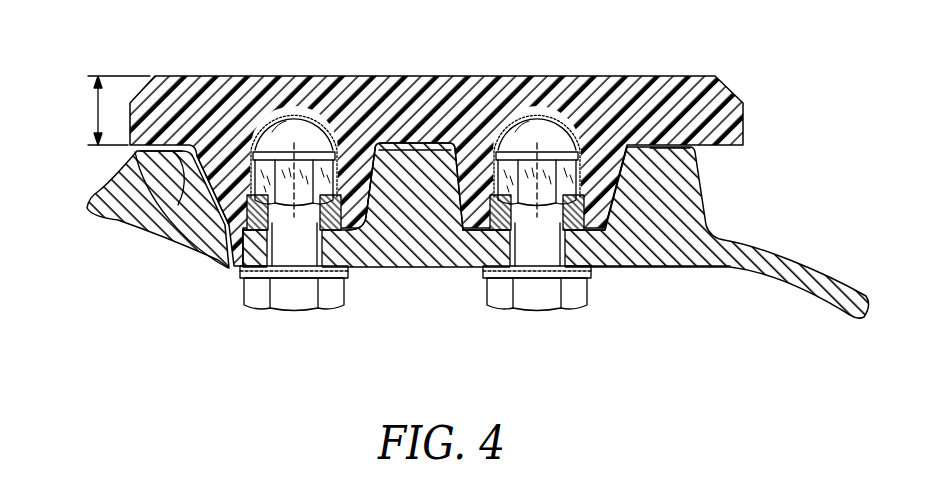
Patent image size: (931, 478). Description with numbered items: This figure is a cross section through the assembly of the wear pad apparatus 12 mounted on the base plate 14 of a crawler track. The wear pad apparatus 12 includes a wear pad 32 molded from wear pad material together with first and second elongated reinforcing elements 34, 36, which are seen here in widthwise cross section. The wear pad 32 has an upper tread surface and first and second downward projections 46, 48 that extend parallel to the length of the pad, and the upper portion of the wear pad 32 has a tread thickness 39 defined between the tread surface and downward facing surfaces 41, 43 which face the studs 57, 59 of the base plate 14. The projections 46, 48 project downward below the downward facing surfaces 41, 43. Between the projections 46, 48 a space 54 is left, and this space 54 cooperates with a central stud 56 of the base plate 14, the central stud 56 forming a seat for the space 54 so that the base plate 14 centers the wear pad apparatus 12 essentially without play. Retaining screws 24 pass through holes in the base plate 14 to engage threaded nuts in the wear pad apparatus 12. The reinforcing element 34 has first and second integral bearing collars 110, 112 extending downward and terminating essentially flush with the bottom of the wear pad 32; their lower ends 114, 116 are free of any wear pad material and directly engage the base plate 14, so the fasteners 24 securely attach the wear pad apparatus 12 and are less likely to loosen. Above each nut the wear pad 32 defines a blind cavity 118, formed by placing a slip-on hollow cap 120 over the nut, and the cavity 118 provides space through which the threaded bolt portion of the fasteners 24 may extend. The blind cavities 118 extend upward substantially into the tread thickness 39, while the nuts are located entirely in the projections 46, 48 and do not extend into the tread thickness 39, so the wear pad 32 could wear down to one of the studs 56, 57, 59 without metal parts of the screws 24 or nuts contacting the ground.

The wear pad apparatus 12 is at (436, 141).
The wear pad 32 is at (708, 103).
The base plate 14 is at (519, 185).
The stud 59 is at (519, 185).
The retaining screws 24 is at (297, 297).
The first elongated reinforcing element 34 is at (230, 262).
The second elongated reinforcing element 36 is at (483, 230).
The tread thickness 39 is at (97, 106).
The downward facing surface 41 is at (150, 160).
The downward facing surface 43 is at (672, 150).
The first downward projection 46 is at (178, 205).
The second downward projection 48 is at (603, 172).
The space 54 is at (372, 120).
The central stud 56 is at (412, 170).
The stud 57 is at (133, 216).
The first bearing collar 110 is at (218, 290).
The lower end 114 is at (232, 258).
The second bearing collar 112 is at (665, 275).
The lower end 116 is at (600, 266).
The blind cavity 118 is at (520, 130).
The slip-on hollow cap 120 is at (570, 137).